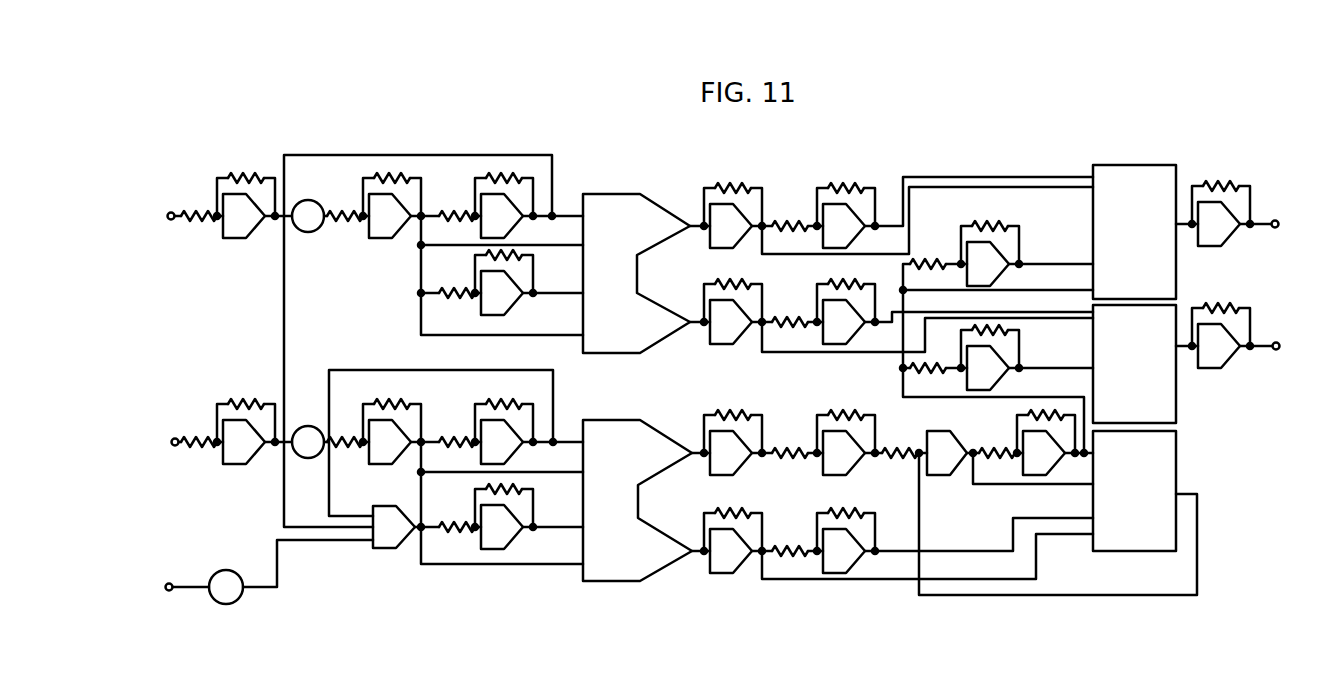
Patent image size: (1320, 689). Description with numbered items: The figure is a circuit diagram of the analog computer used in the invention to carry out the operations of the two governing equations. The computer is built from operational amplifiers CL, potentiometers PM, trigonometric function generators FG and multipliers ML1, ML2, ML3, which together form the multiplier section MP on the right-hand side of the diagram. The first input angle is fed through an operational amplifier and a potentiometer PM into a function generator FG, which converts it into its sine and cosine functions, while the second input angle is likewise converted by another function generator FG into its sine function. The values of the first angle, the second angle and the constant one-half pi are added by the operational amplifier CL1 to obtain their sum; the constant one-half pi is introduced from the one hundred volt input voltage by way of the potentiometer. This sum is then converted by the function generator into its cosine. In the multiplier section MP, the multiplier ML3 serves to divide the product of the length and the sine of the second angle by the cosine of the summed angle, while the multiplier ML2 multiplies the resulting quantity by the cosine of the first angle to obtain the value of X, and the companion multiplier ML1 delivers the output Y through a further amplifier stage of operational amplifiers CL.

The operational amplifier CL1 is at (247, 233).
The operational amplifier CL is at (400, 548).
The potentiometer PM is at (318, 232).
The trigonometric function generator FG is at (614, 192).
The multiplier unit MP is at (1134, 337).
The multiplier ML1 is at (1134, 232).
The multiplier ML2 is at (1134, 364).
The multiplier ML3 is at (1134, 491).
The Y output Y is at (1272, 211).
The value of X is at (1278, 360).